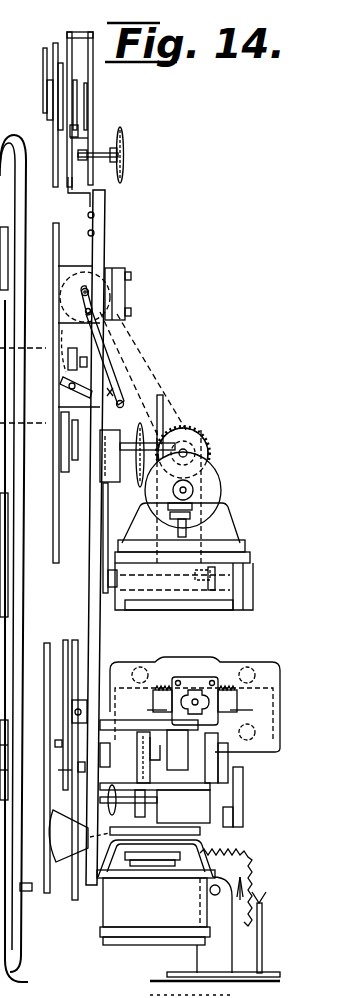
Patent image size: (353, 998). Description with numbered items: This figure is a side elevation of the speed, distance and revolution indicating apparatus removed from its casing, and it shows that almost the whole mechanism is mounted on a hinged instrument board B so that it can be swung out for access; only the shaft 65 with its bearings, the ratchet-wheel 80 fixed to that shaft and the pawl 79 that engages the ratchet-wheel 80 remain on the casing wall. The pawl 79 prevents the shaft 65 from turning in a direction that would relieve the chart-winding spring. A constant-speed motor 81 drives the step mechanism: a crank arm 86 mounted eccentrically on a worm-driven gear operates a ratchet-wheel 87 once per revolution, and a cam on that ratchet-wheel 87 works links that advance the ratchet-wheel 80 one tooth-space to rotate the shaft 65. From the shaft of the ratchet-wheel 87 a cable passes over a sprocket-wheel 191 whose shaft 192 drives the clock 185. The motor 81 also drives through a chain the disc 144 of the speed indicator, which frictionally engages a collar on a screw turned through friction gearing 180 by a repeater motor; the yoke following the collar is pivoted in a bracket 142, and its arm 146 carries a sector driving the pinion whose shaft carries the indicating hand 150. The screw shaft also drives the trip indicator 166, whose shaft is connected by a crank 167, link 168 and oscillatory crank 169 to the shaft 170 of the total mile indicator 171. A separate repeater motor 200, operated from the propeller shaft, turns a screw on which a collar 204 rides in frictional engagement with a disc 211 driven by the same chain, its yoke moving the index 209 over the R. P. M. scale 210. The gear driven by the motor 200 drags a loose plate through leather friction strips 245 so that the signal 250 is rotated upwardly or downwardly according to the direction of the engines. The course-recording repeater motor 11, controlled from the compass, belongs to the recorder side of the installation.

The clock 185 is at (45, 108).
The shaft 192 is at (100, 152).
The sprocket-wheel 191 is at (125, 163).
The instrument board B is at (112, 238).
The trip indicator 166 is at (72, 269).
The crank 167 is at (81, 305).
The link 168 is at (111, 352).
The oscillatory crank 169 is at (121, 392).
The total mile indicator 171 is at (86, 346).
The shaft 170 is at (68, 386).
The disc 144 is at (172, 399).
The indicating hand 150 is at (52, 442).
The arm 146 is at (105, 508).
The friction gearing 180 is at (194, 512).
The step by step repeater motor 11 is at (172, 577).
The bracket 142 is at (212, 590).
The R. P. M. scale 210 is at (47, 652).
The motor 81 is at (189, 670).
The index 209 is at (42, 763).
The crank arm 86 is at (222, 775).
The ratchet-wheel 87 is at (226, 817).
The disc 211 is at (153, 819).
The collar 204 is at (192, 792).
The ratchet-wheel 80 is at (238, 864).
The signal 250 is at (62, 870).
The friction strips 245 is at (134, 862).
The repeater motor 200 is at (156, 907).
The shaft 65 is at (220, 925).
The pawl 79 is at (263, 929).